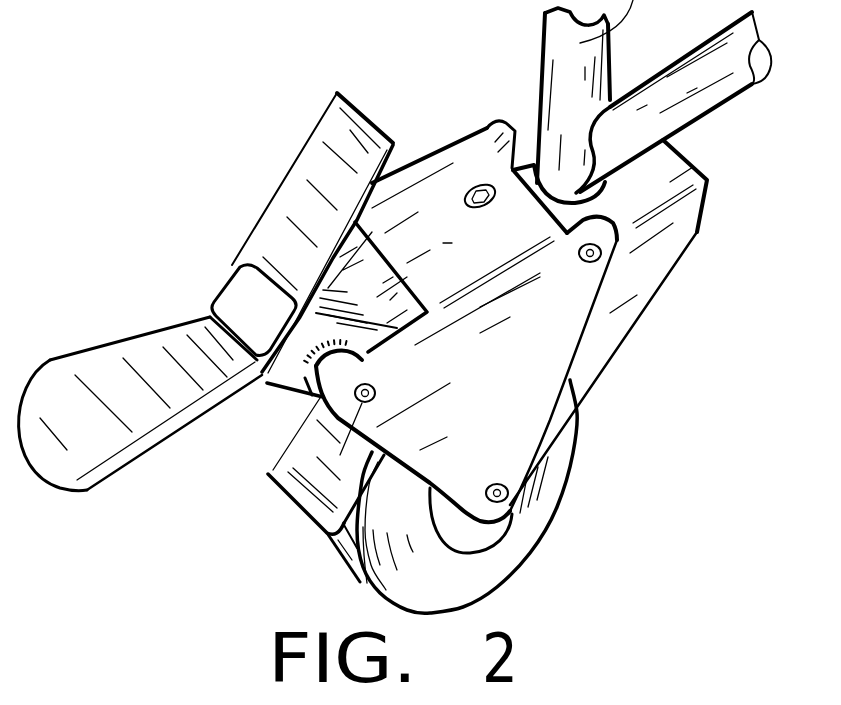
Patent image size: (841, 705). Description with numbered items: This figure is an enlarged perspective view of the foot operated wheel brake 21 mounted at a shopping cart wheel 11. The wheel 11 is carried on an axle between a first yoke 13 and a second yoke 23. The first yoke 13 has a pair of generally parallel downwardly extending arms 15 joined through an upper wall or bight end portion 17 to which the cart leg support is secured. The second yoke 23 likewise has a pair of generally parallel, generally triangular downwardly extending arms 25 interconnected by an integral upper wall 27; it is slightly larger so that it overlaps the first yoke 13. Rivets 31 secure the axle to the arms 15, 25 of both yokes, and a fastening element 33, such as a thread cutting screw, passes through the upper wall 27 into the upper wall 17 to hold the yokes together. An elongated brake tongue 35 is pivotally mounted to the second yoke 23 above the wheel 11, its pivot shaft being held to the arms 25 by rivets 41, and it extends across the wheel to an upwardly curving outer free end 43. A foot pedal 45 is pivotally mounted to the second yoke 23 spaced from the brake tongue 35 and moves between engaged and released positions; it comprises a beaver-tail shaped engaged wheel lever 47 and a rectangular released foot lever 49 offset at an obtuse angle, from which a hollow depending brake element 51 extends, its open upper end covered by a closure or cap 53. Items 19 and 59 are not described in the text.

The wheel 11 is at (465, 571).
The first yoke 13 is at (696, 246).
The downwardly extending arms 15 is at (610, 325).
The upper wall or bight end portion 17 is at (690, 173).
The cross bar 19 is at (653, 102).
The foot operated wheel brake 21 is at (192, 293).
The second yoke 23 is at (586, 346).
The downwardly extending arms 25 is at (497, 143).
The upper wall or bight end portion 27 is at (437, 217).
The rivets 31 is at (510, 520).
The fastening element 33 is at (480, 185).
The brake tongue 35 is at (352, 568).
The rivets 41 is at (600, 255).
The outer free end 43 is at (300, 512).
The foot pedal 45 is at (280, 368).
The engaged wheel lever 47 is at (97, 430).
The released foot lever 49 is at (290, 187).
The depending brake element 51 is at (313, 380).
The closure or cap 53 is at (247, 303).
The pin 59 is at (296, 495).